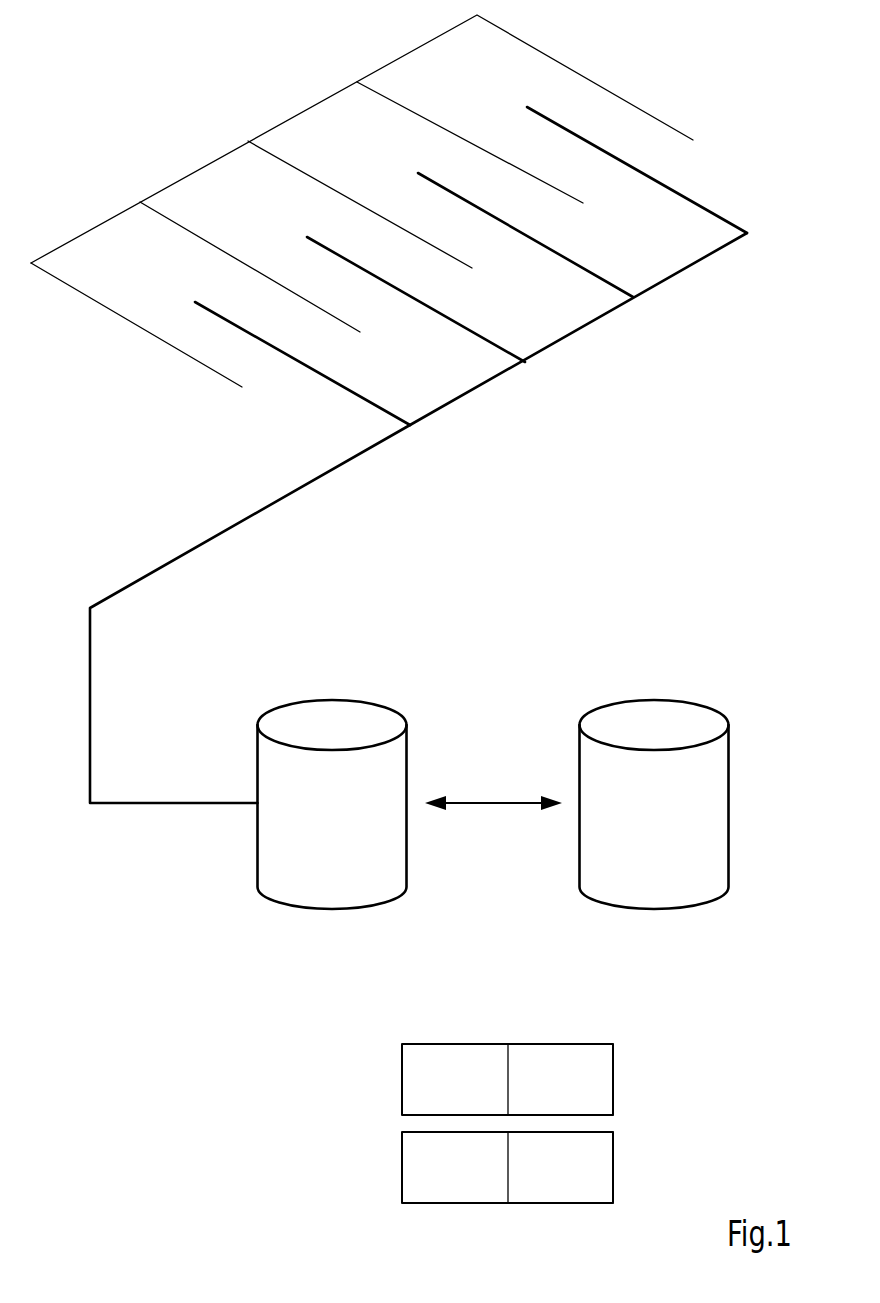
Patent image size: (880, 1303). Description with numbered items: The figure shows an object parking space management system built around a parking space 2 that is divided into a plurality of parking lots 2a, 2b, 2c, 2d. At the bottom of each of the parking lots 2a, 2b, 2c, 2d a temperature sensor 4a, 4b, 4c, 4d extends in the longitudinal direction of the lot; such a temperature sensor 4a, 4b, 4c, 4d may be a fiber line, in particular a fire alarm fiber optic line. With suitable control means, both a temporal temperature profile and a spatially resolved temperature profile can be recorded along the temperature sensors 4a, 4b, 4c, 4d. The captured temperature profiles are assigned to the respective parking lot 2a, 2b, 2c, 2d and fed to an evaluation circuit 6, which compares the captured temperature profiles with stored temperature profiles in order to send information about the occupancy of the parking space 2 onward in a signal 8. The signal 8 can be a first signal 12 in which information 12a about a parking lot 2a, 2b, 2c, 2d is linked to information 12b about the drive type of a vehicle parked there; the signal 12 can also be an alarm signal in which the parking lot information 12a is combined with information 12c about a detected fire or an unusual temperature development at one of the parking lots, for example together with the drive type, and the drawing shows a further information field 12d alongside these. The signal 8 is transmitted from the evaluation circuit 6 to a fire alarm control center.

The parking space 2 is at (200, 93).
The parking lot 2a is at (152, 269).
The parking lot 2b is at (260, 206).
The parking lot 2c is at (367, 144).
The parking lot 2d is at (489, 84).
The temperature sensor 4a is at (357, 390).
The temperature sensor 4b is at (465, 327).
The temperature sensor 4c is at (578, 264).
The temperature sensor 4d is at (688, 199).
The evaluation circuit 6 is at (352, 712).
The signal 8 is at (492, 802).
The first signal 12 is at (380, 1032).
The information about a parking lot 12a is at (474, 1092).
The information about a drive type 12b is at (578, 1092).
The information about a detected fire 12c is at (474, 1180).
The fourth data record 12d is at (578, 1180).